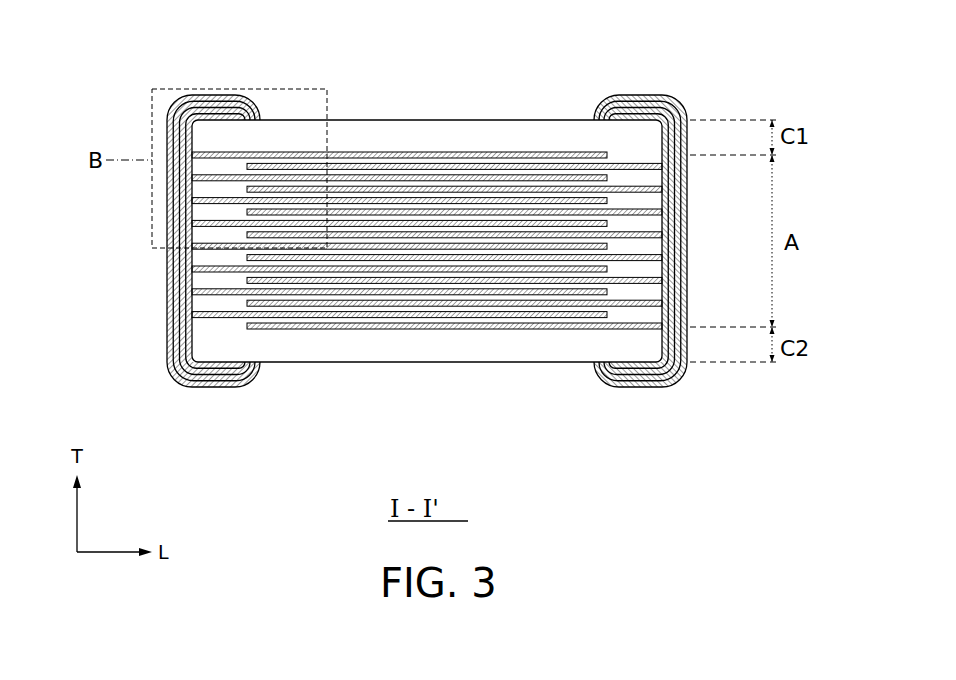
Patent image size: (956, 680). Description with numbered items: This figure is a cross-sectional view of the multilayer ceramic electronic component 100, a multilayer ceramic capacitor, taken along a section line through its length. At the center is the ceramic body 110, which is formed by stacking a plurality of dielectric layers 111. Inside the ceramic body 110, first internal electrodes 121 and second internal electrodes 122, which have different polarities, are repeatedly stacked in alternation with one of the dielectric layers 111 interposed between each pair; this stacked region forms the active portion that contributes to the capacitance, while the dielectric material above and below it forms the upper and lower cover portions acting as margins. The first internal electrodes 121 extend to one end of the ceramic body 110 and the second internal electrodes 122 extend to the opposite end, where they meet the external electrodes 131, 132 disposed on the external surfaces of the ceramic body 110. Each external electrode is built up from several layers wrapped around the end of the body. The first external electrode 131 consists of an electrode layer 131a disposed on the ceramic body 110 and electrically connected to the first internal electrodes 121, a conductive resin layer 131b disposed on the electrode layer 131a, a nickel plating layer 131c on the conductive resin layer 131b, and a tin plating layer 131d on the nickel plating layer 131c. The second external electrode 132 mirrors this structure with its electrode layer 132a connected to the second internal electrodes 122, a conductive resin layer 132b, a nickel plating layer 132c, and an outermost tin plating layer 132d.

The multilayer ceramic electronic component 100 is at (453, 22).
The ceramic body 110 is at (423, 120).
The dielectric layer 111 is at (647, 203).
The first internal electrode 121 is at (607, 178).
The second internal electrode 122 is at (643, 242).
The first external electrode 131 is at (395, 456).
The electrode layer 131a is at (262, 365).
The conductive resin layer 131b is at (260, 382).
The nickel plating layer 131c is at (224, 388).
The tin plating layer 131d is at (169, 372).
The second external electrode 132 is at (458, 456).
The electrode layer 132a is at (592, 365).
The conductive resin layer 132b is at (594, 382).
The nickel plating layer 132c is at (630, 388).
The tin plating layer 132d is at (685, 372).